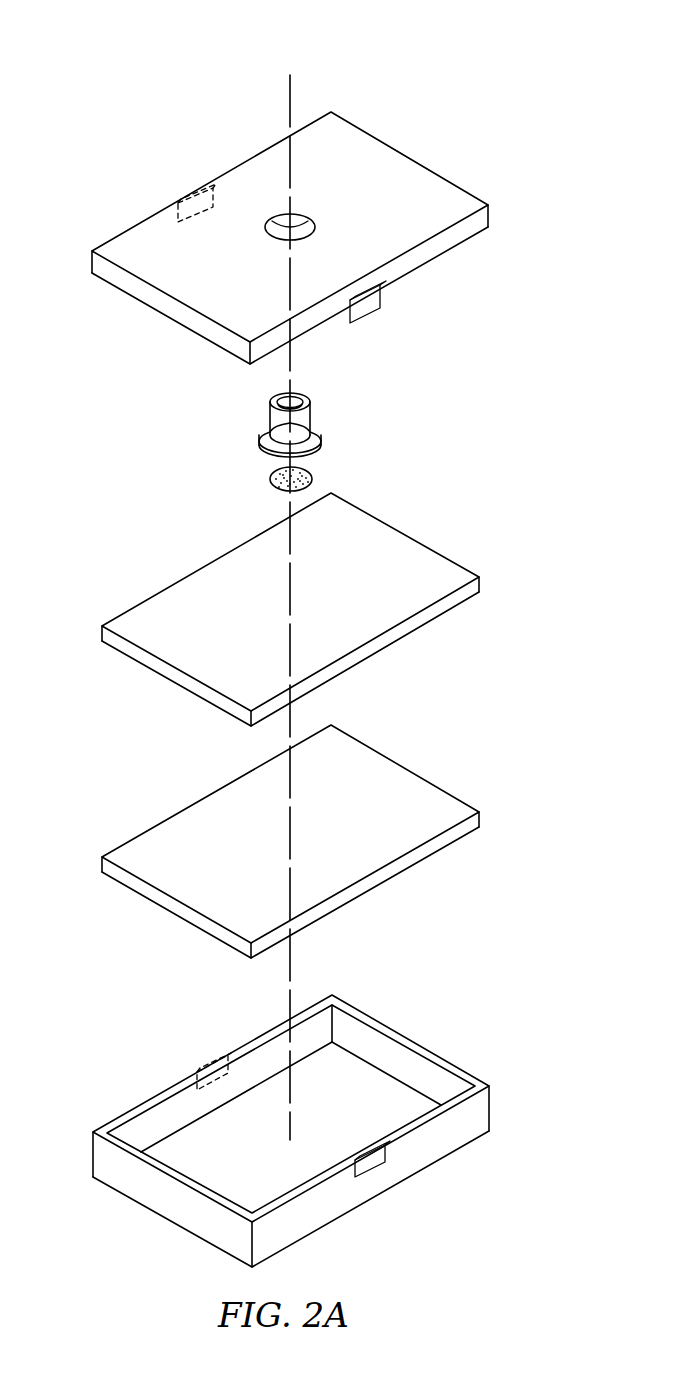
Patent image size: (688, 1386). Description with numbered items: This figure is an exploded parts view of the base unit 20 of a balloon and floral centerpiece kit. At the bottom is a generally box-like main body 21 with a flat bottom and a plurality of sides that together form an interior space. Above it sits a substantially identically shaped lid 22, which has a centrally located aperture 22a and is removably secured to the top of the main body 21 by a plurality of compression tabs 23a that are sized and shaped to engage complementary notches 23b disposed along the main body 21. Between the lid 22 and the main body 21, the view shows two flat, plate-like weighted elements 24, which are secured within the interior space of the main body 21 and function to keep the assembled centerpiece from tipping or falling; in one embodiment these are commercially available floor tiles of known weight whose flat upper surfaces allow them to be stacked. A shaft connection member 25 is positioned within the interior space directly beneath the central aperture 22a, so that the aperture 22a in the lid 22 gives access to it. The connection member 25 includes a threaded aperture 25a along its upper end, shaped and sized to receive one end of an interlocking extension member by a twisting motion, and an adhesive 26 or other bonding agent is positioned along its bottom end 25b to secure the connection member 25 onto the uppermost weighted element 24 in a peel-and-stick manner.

The base unit 20 is at (182, 100).
The main body 21 is at (118, 1093).
The lid 22 is at (115, 210).
The aperture 22a is at (298, 221).
The compression tabs 23a is at (193, 193).
The notches 23b is at (215, 1062).
The weighted elements 24 is at (160, 573).
The shaft connection member 25 is at (284, 405).
The threaded aperture 25a is at (309, 401).
The bottom end 25b is at (320, 440).
The adhesive 26 is at (271, 478).